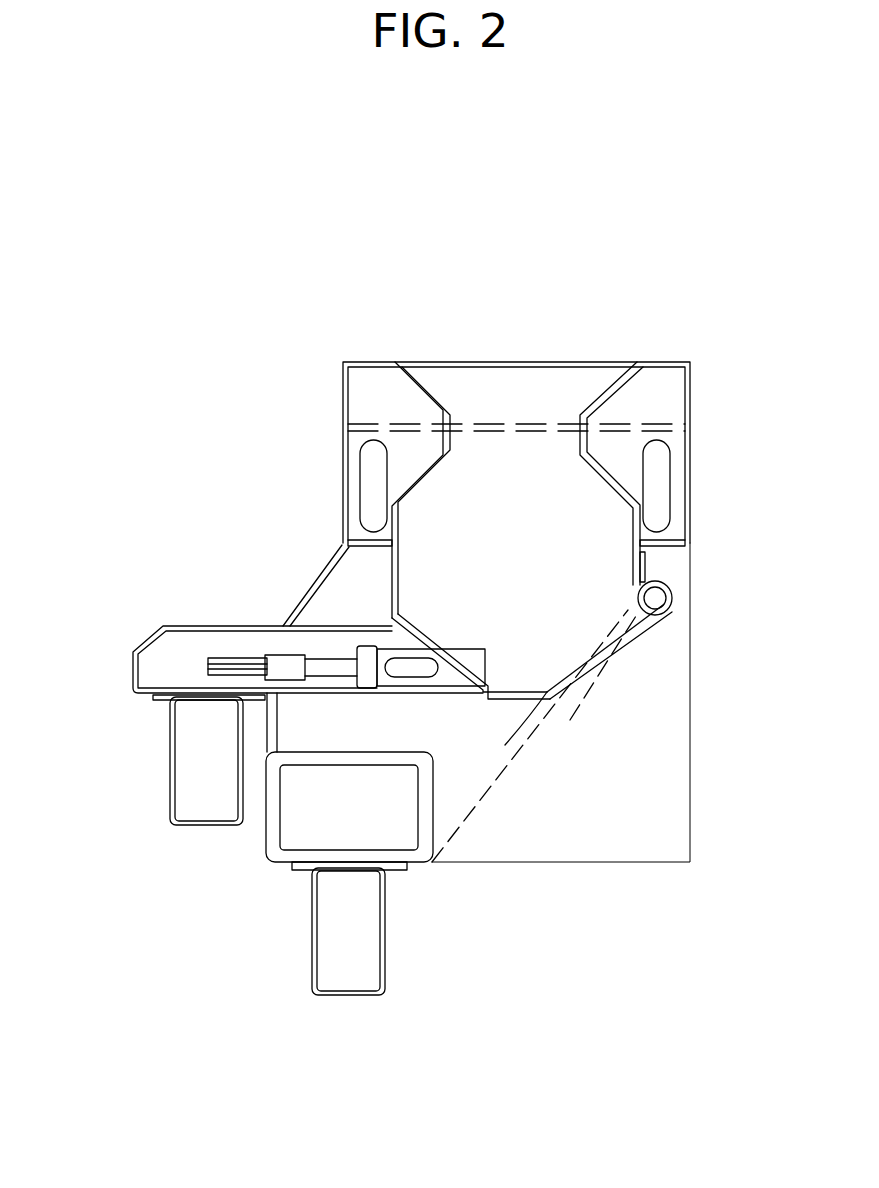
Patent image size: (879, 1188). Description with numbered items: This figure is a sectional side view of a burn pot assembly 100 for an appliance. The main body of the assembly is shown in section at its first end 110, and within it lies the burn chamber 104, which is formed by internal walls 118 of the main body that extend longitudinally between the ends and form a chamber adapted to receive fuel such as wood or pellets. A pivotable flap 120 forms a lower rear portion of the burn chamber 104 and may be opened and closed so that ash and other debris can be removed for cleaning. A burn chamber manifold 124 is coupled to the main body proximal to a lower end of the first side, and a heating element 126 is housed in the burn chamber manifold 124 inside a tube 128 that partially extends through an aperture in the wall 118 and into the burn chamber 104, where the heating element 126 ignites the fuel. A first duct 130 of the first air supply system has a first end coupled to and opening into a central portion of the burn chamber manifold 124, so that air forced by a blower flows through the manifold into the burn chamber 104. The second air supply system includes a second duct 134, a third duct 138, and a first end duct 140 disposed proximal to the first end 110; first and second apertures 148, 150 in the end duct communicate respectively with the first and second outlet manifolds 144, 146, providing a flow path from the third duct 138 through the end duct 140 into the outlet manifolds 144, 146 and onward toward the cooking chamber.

The burn pot assembly 100 is at (689, 322).
The burn chamber 104 is at (603, 568).
The first end 110 is at (515, 362).
The internal walls 118 is at (398, 543).
The pivotable flap 120 is at (668, 610).
The burn chamber manifold 124 is at (200, 626).
The heating element 126 is at (320, 660).
The tube 128 is at (478, 655).
The first duct 130 is at (170, 775).
The second duct 134 is at (387, 917).
The third duct 138 is at (422, 855).
The first end duct 140 is at (477, 768).
The first outlet manifold 144 is at (422, 383).
The second outlet manifold 146 is at (607, 383).
The first aperture 148 is at (388, 467).
The second aperture 150 is at (673, 478).